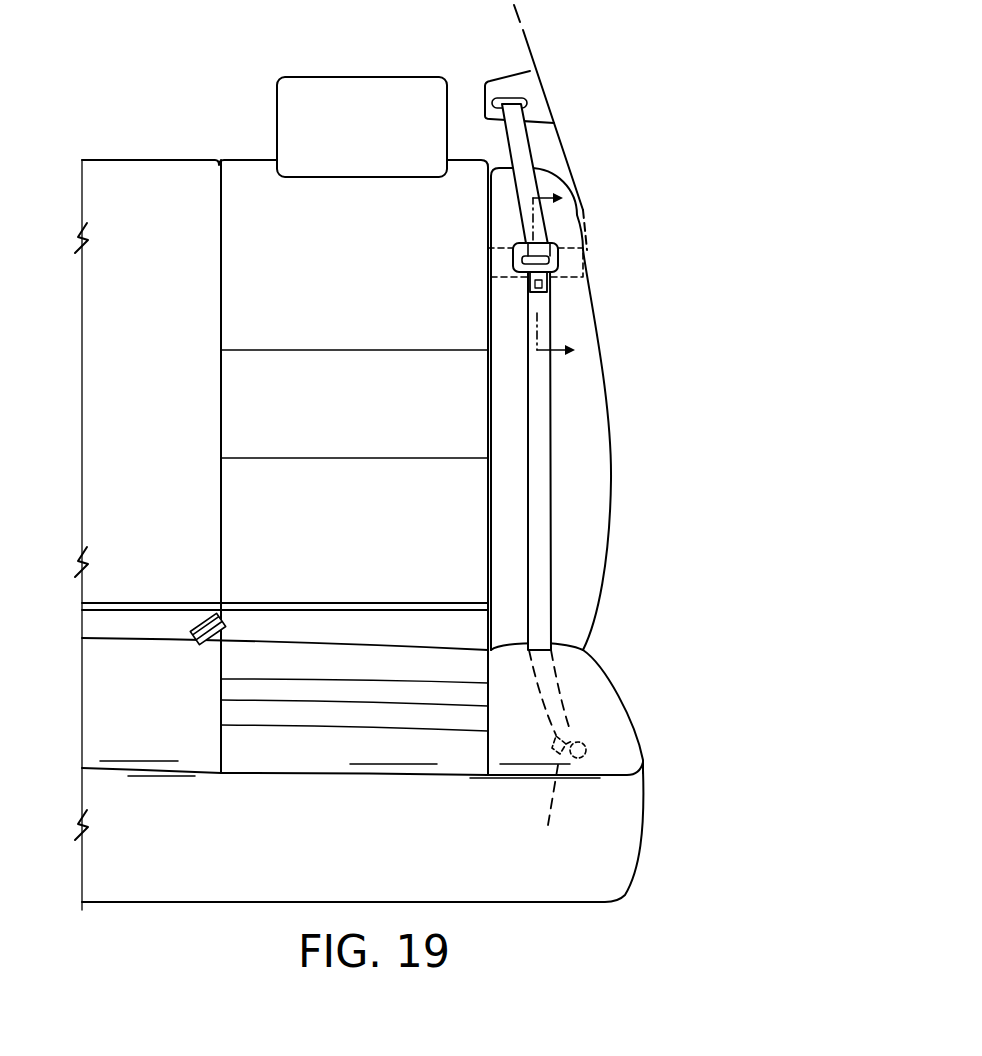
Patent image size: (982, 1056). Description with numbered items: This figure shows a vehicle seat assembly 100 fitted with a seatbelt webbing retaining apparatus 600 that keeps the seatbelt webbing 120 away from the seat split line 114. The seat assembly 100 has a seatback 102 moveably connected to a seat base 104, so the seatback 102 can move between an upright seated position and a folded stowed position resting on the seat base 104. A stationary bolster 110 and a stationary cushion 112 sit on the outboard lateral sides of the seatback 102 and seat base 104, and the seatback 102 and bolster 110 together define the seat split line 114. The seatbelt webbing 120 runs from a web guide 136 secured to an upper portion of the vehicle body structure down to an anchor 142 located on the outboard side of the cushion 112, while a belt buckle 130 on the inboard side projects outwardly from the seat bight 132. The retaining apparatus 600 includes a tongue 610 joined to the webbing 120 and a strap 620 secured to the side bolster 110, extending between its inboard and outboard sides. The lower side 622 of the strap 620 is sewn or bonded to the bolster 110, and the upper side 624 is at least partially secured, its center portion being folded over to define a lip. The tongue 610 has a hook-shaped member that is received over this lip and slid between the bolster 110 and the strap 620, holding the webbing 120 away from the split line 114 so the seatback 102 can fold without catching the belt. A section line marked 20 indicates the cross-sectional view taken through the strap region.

The section line 20- 20 is at (601, 269).
The vehicle seat assembly 100 is at (690, 385).
The seatback 102 is at (256, 177).
The seat base 104 is at (365, 747).
The stationary bolster 110 is at (592, 540).
The stationary cushion 112 is at (610, 725).
The seat split line 114 is at (490, 527).
The seatbelt webbing 120 is at (560, 497).
The belt buckle 130 is at (195, 625).
The seat bight 132 is at (130, 640).
The web guide 136 is at (532, 83).
The anchor 142 is at (565, 798).
The seatbelt webbing retaining apparatus 600 is at (586, 290).
The tongue 610 is at (505, 264).
The strap 620 is at (573, 262).
The lower side of the strap 622 is at (500, 278).
The upper side of the strap 624 is at (497, 250).